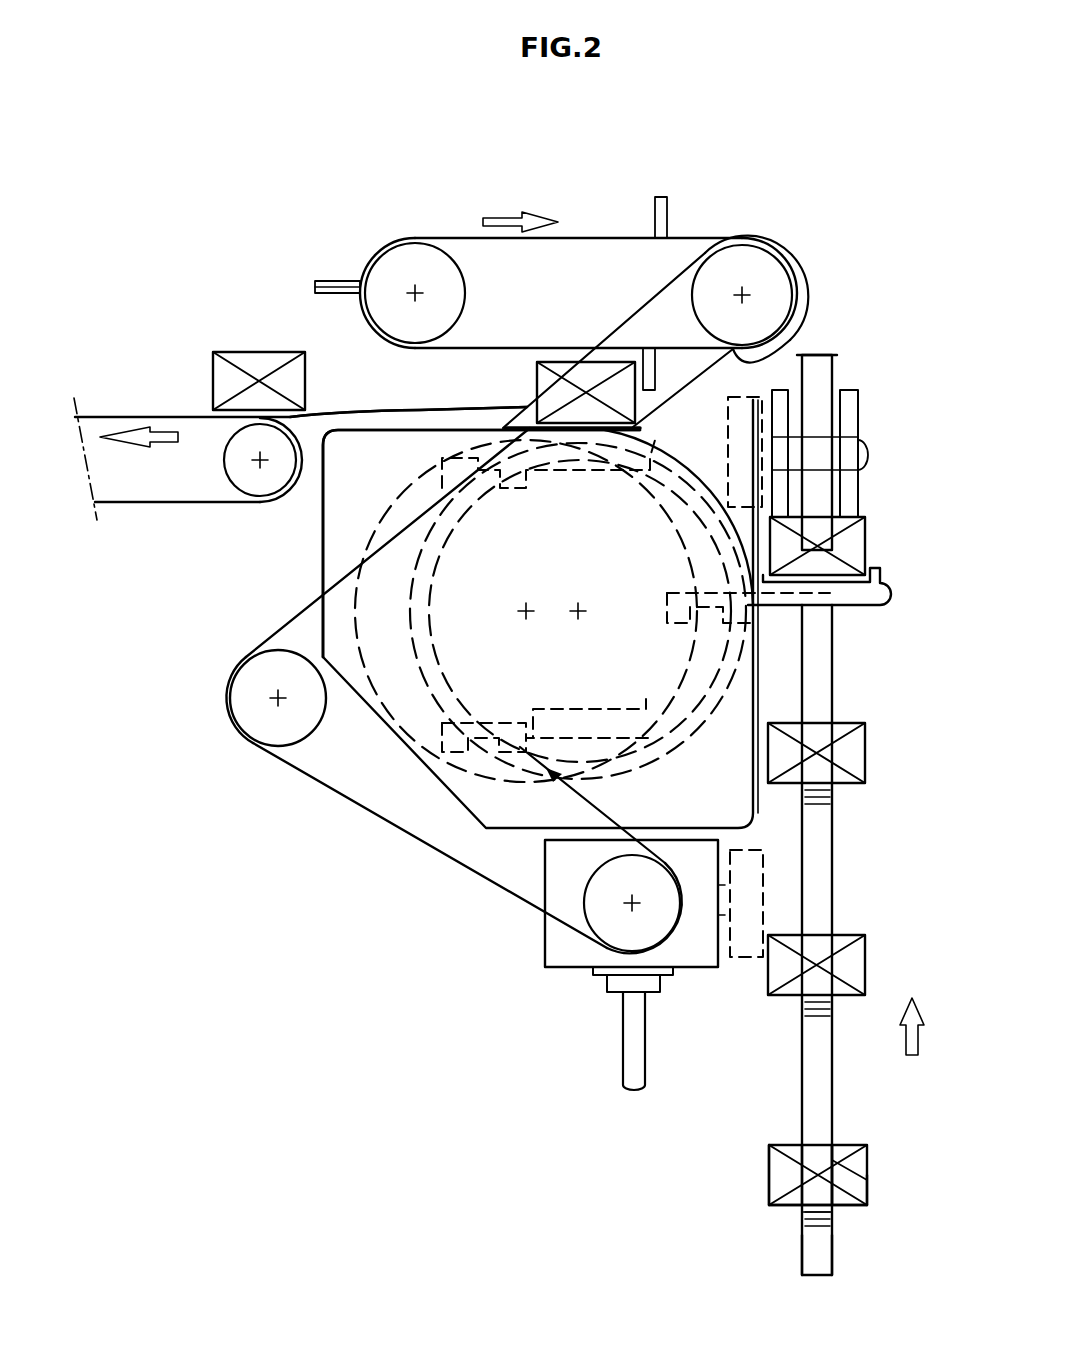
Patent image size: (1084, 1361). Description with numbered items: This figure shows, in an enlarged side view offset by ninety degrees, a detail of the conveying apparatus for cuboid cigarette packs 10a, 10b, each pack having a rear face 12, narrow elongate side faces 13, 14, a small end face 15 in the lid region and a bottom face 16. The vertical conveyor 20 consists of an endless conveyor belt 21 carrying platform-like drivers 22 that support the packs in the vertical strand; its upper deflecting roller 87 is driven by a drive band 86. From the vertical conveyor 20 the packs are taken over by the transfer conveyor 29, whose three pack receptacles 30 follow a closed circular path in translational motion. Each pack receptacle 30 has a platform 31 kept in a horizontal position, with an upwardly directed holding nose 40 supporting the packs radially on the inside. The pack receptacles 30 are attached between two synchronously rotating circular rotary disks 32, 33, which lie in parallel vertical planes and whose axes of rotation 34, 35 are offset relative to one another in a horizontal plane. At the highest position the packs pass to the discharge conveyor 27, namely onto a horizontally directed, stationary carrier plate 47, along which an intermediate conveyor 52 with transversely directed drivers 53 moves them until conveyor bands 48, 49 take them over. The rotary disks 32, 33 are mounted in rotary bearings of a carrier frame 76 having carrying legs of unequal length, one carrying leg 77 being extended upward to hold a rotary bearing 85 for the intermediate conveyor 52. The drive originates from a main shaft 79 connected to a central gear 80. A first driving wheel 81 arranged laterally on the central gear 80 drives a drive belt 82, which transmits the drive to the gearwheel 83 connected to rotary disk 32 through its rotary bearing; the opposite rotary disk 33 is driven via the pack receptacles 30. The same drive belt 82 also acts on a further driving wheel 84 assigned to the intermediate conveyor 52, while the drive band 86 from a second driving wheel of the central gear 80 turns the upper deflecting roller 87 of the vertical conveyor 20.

The pack 10a is at (853, 1175).
The pack 10b is at (853, 1175).
The rear face 12 is at (862, 1175).
The side face 13 is at (785, 1145).
The side face 14 is at (848, 1207).
The end face 15 is at (768, 1178).
The bottom face 16 is at (868, 1187).
The vertical conveyor 20 is at (740, 1147).
The conveyor belt 21 is at (810, 1258).
The drivers 22 is at (805, 1213).
The discharge conveyor 27 is at (149, 405).
The transfer conveyor 29 is at (243, 796).
The pack receptacle 30 is at (560, 726).
The platform 31 is at (853, 597).
The rotary disk 32 is at (360, 608).
The rotary disk 33 is at (353, 560).
The axis of rotation 34 is at (524, 613).
The axis of rotation 35 is at (576, 613).
The holding nose 40 is at (872, 578).
The carrier plate 47 is at (395, 413).
The conveyor band 48 is at (107, 413).
The conveyor band 49 is at (107, 413).
The intermediate conveyor 52 is at (631, 215).
The drivers 53 is at (662, 197).
The carrier frame 76 is at (335, 520).
The carrying leg 77 is at (335, 520).
The main shaft 79 is at (621, 1064).
The central gear 80 is at (560, 952).
The first driving wheel 81 is at (617, 933).
The drive belt 82 is at (640, 307).
The gearwheel 83 is at (440, 548).
The driving wheel 84 is at (780, 283).
The rotary bearing 85 is at (743, 292).
The drive band 86 is at (758, 835).
The upper deflecting roller 87 is at (835, 367).